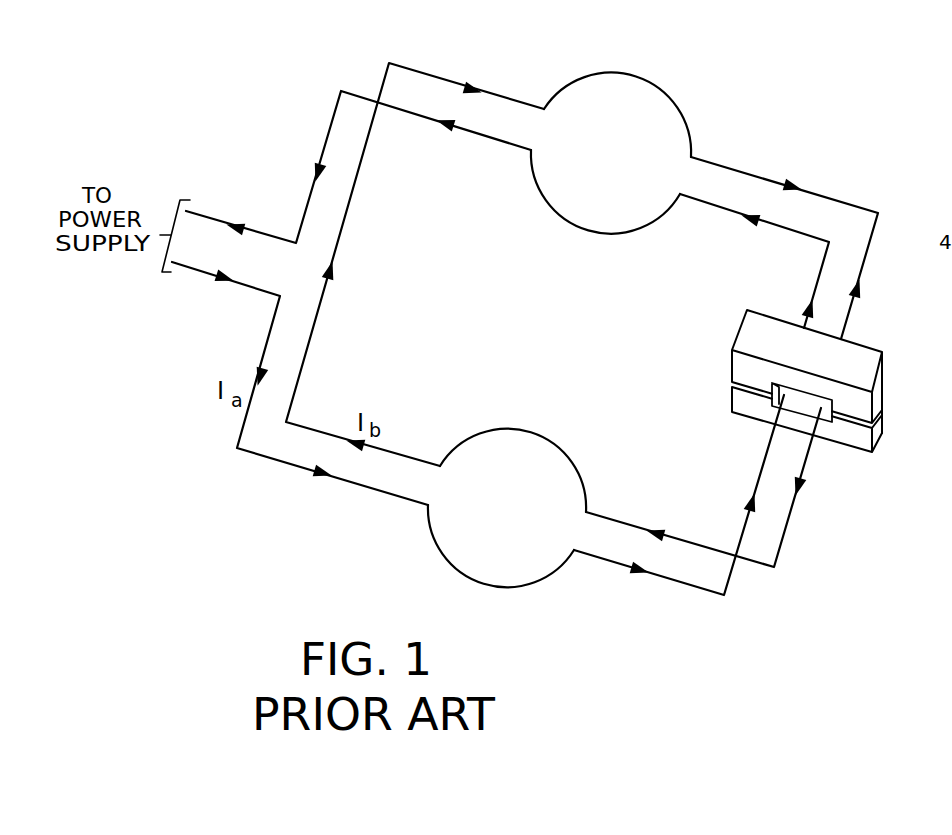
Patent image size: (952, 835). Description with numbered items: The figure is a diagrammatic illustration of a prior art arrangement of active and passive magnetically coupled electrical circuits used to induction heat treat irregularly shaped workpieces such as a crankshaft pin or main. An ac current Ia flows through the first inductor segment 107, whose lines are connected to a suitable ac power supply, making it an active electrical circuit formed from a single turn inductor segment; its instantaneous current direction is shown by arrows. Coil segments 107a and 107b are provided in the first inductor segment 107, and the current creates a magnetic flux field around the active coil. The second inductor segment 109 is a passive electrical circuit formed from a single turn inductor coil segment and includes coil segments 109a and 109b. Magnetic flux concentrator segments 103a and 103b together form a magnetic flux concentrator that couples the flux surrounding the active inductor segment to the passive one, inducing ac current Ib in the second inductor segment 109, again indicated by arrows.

The magnetic flux concentrator segment 103a is at (853, 438).
The magnetic flux concentrator segment 103b is at (848, 362).
The first inductor segment 107 is at (353, 493).
The coil segment 107a is at (537, 588).
The coil segment 107b is at (598, 233).
The second inductor segment 109 is at (303, 395).
The coil segment 109a is at (539, 433).
The coil segment 109b is at (692, 100).